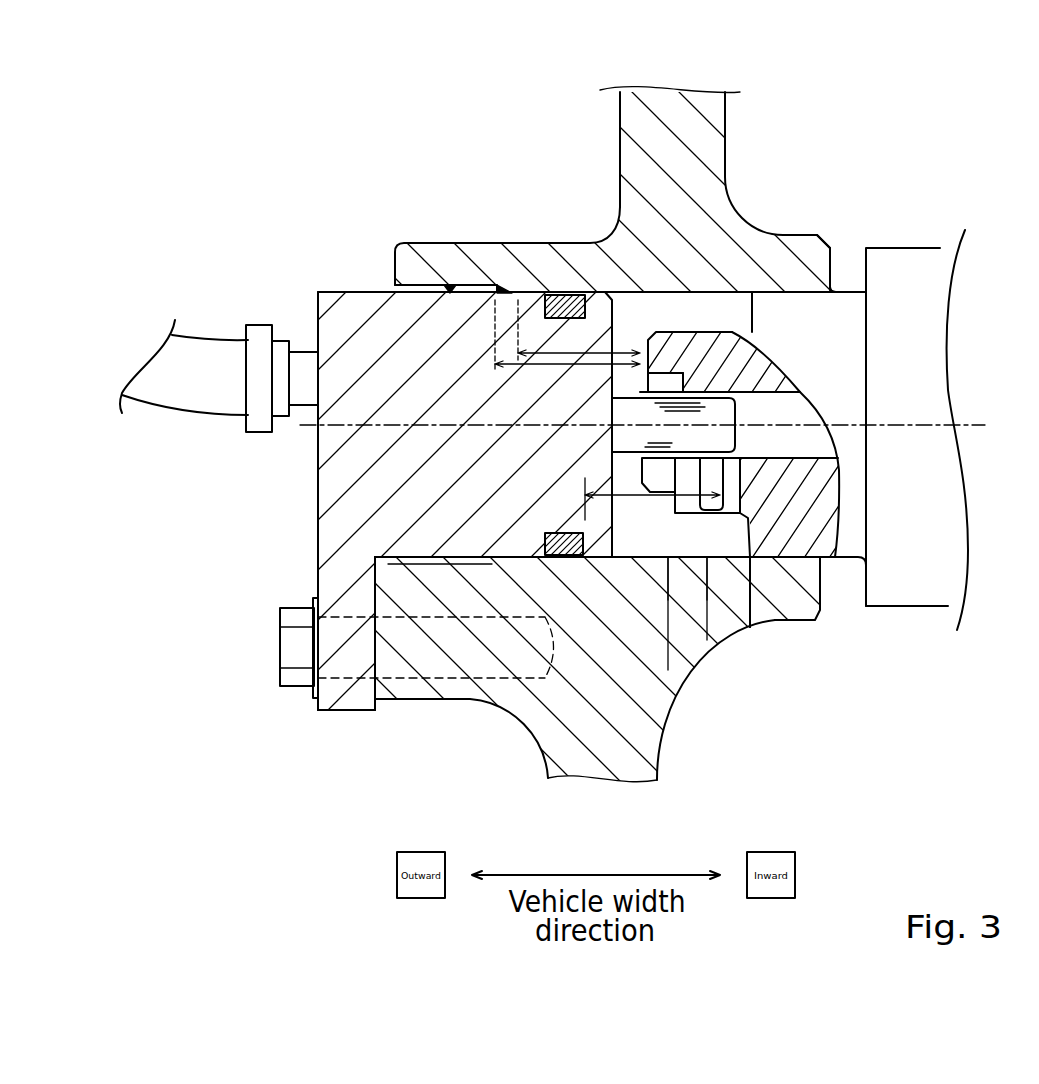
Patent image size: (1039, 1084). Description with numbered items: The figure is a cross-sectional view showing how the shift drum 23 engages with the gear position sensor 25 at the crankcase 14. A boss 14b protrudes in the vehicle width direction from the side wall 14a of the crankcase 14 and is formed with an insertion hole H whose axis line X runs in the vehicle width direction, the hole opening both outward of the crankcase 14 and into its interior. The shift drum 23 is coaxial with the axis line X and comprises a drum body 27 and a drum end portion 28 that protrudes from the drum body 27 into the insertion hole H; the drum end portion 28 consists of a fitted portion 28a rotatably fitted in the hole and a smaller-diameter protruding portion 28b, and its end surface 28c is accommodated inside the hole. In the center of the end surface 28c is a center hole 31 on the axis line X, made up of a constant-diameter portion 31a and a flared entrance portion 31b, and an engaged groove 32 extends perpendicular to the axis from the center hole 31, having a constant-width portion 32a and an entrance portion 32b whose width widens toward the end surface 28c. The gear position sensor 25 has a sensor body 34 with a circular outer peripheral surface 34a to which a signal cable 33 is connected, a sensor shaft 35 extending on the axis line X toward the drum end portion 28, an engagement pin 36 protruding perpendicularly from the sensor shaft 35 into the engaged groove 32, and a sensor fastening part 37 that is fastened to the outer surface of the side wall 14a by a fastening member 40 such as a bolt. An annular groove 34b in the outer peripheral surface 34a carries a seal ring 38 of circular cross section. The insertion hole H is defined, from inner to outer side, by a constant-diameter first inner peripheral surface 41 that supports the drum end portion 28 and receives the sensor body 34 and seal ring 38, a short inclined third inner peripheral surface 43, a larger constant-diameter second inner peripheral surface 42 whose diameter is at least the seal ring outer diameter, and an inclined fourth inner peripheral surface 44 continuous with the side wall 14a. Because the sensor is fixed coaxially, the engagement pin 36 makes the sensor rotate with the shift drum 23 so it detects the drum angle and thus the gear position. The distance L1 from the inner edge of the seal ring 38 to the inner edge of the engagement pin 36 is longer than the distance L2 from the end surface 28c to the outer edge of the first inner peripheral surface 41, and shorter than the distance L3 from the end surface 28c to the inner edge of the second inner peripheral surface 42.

The crankcase 14 is at (655, 108).
The side wall 14a is at (650, 740).
The boss 14b is at (397, 283).
The shift drum 23 is at (928, 617).
The gear position sensor 25 is at (309, 505).
The drum body 27 is at (915, 250).
The drum end portion 28 is at (912, 150).
The fitted portion 28a is at (833, 313).
The protruding portion 28b is at (752, 292).
The end surface 28c is at (640, 466).
The center hole 31 is at (783, 450).
The constant-diameter portion 31a is at (798, 410).
The entrance portion 31b is at (640, 407).
The engaged groove 32 is at (797, 705).
The constant-width portion 32a is at (707, 640).
The entrance portion 32b is at (668, 670).
The signal cable 33 is at (160, 404).
The sensor body 34 is at (330, 295).
The outer peripheral surface 34a is at (472, 565).
The annular groove 34b is at (534, 300).
The sensor shaft 35 is at (683, 390).
The engagement pin 36 is at (742, 518).
The sensor fastening part 37 is at (332, 712).
The seal ring 38 is at (568, 298).
The fastening member 40 is at (280, 642).
The first inner peripheral surface 41 is at (685, 293).
The second inner peripheral surface 42 is at (450, 288).
The third inner peripheral surface 43 is at (497, 290).
The fourth inner peripheral surface 44 is at (395, 286).
The insertion hole H is at (422, 560).
The distance L1 is at (652, 501).
The distance L2 is at (579, 330).
The distance L3 is at (567, 346).
The axis line X is at (988, 425).